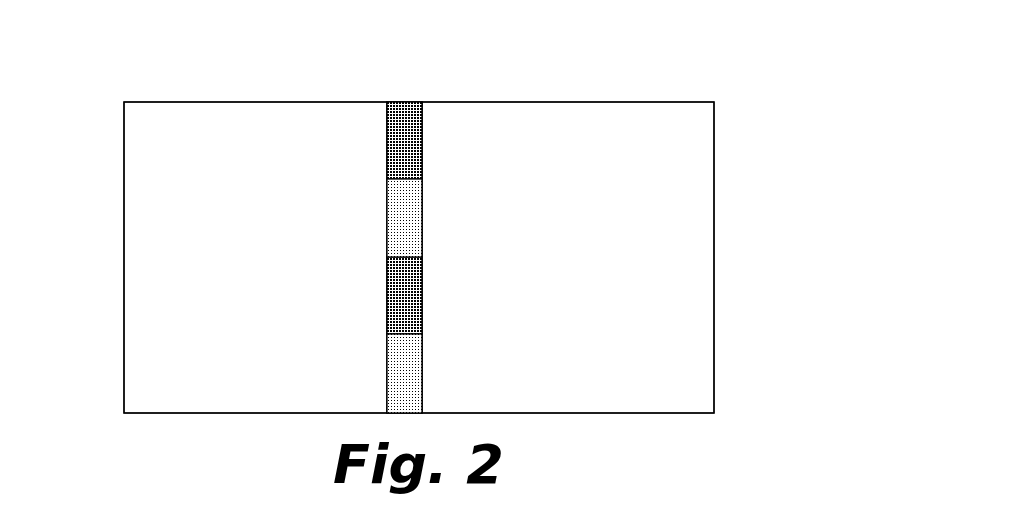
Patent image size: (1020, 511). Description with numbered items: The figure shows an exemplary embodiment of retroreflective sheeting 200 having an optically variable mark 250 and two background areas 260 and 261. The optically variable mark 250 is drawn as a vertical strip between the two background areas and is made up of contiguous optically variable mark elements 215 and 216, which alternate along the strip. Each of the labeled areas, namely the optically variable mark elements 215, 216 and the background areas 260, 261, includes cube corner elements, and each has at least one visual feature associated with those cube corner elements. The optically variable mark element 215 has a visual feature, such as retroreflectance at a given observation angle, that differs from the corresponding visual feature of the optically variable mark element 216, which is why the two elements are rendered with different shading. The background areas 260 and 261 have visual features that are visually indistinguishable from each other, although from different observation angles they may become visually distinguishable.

The retroreflective sheeting 200 is at (732, 79).
The background area 260 is at (143, 129).
The background area 261 is at (688, 293).
The optically variable mark 250 is at (374, 107).
The optically variable mark element 215 is at (410, 303).
The optically variable mark element 216 is at (405, 217).